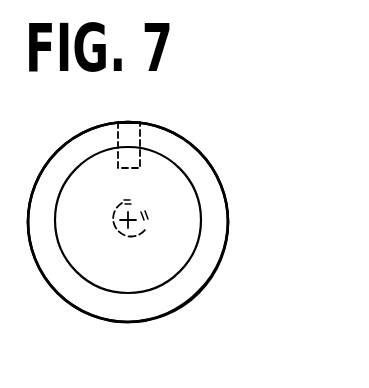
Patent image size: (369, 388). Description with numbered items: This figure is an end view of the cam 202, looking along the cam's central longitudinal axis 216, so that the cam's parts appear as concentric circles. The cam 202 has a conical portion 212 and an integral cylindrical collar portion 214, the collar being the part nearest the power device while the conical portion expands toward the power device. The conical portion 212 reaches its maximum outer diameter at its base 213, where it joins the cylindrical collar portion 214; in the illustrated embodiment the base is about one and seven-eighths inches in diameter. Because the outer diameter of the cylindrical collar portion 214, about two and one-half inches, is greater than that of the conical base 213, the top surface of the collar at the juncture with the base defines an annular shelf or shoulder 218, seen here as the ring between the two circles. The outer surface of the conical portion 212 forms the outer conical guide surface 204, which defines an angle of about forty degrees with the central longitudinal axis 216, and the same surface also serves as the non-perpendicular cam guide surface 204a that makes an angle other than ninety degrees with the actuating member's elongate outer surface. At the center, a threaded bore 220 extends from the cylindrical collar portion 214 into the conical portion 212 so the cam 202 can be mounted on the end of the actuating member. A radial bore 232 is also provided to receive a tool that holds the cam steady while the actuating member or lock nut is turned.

The cam 202 is at (197, 168).
The outer conical guide surface 204 is at (190, 202).
The non-perpendicular cam guide surface 204a is at (98, 262).
The conical portion 212 is at (182, 262).
The base 213 is at (198, 245).
The cylindrical collar portion 214 is at (192, 283).
The central longitudinal axis 216 is at (125, 218).
The annular shelf or shoulder 218 is at (72, 153).
The threaded bore 220 is at (136, 206).
The radial bore 232 is at (128, 132).